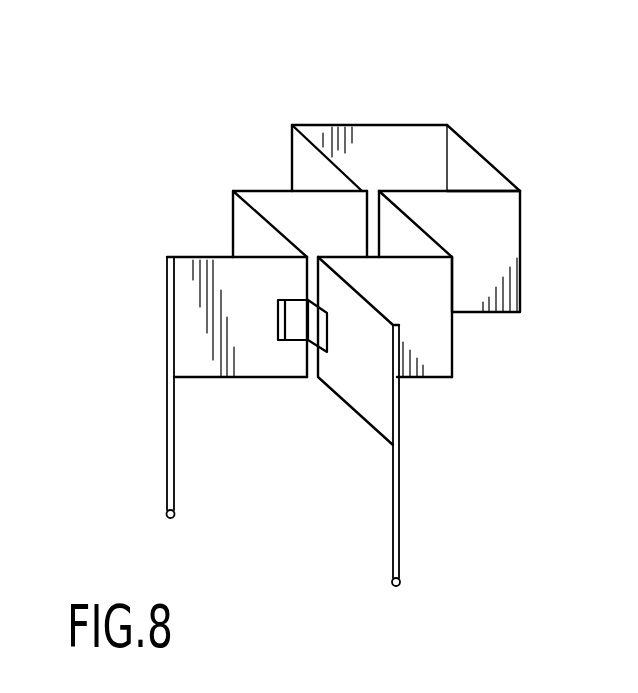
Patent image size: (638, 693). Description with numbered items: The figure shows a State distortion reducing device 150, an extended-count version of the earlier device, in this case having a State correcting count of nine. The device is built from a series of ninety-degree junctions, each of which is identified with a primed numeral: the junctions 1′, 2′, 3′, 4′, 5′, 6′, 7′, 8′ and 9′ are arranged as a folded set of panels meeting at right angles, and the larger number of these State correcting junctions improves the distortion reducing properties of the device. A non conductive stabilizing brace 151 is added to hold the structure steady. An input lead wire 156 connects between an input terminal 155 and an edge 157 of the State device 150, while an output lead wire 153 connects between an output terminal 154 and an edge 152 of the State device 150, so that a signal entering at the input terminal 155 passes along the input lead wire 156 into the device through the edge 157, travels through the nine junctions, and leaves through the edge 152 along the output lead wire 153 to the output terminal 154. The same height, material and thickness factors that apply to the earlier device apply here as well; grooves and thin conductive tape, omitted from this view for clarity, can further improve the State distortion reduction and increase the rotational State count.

The State distortion reducing device 150 is at (340, 114).
The 90 degree junction 1′ is at (325, 259).
The 90 degree junction 2′ is at (452, 377).
The 90 degree junction 3′ is at (390, 196).
The 90 degree junction 4′ is at (523, 205).
The 90 degree junction 5′ is at (447, 126).
The 90 degree junction 6′ is at (290, 143).
The 90 degree junction 7′ is at (366, 191).
The 90 degree junction 8′ is at (232, 192).
The 90 degree junction 9′ is at (303, 256).
The non conductive stabilizing brace 151 is at (292, 352).
The edge 152 is at (410, 422).
The output lead wire 153 is at (412, 515).
The output terminal 154 is at (386, 594).
The input terminal 155 is at (158, 530).
The input lead wire 156 is at (187, 486).
The edge 157 is at (156, 306).